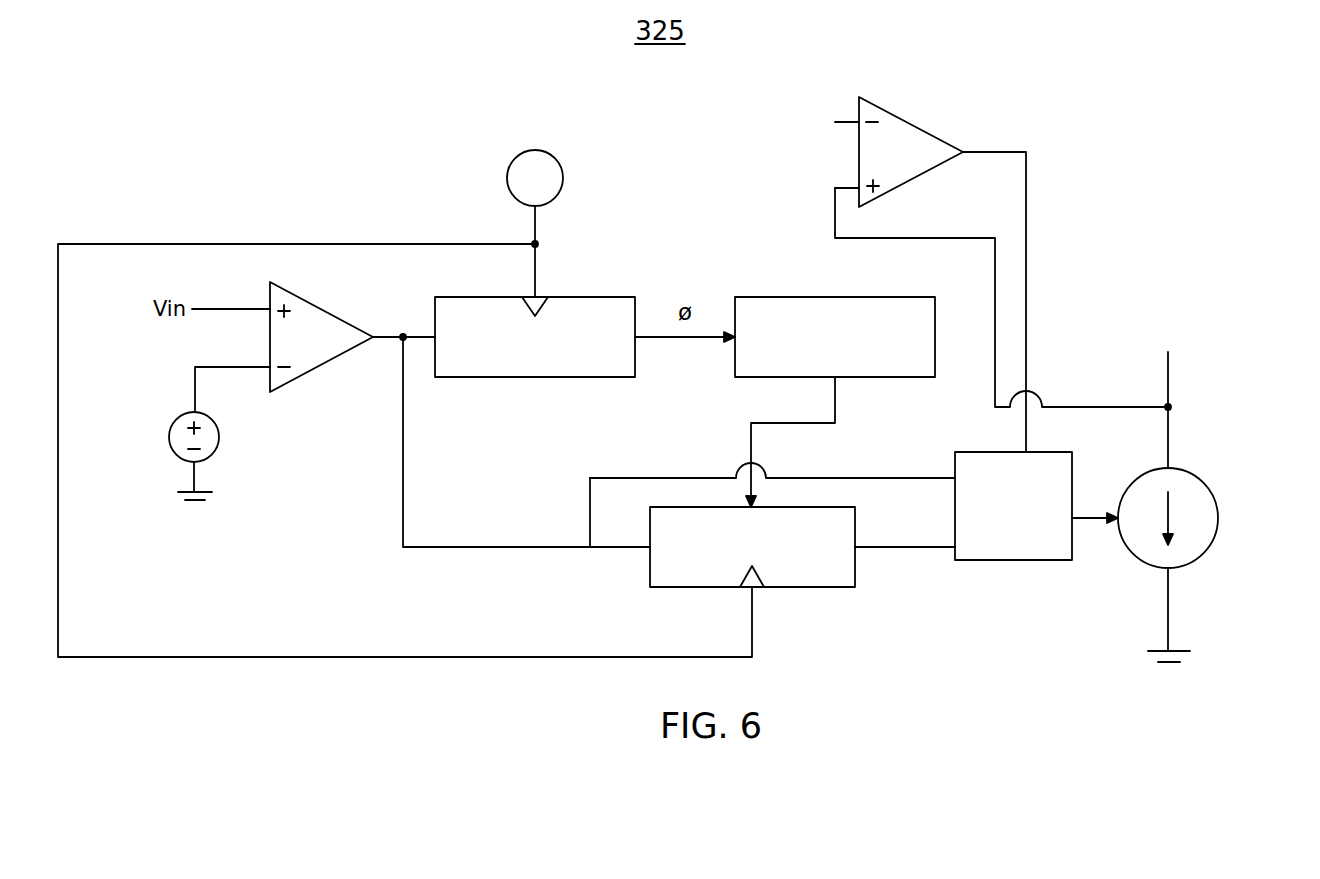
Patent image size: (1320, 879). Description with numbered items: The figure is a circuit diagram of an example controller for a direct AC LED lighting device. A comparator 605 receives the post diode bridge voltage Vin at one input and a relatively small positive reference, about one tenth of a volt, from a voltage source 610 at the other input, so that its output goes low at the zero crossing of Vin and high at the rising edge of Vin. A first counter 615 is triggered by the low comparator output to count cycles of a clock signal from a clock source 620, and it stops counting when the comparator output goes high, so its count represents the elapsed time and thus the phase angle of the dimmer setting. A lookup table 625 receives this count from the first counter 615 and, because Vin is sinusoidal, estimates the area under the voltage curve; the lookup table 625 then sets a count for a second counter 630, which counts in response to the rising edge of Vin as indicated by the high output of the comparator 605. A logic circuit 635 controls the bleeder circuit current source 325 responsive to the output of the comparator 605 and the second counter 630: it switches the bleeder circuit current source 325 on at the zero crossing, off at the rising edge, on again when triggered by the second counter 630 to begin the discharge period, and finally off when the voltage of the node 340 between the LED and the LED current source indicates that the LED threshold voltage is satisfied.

The bleeder circuit current source 325 is at (1220, 523).
The node 340 is at (1178, 405).
The comparator 605 is at (318, 368).
The voltage source 610 is at (169, 446).
The first counter 615 is at (602, 297).
The clock source 620 is at (566, 180).
The lookup table 625 is at (818, 587).
The second counter 630 is at (1015, 560).
The logic circuit 635 is at (922, 127).